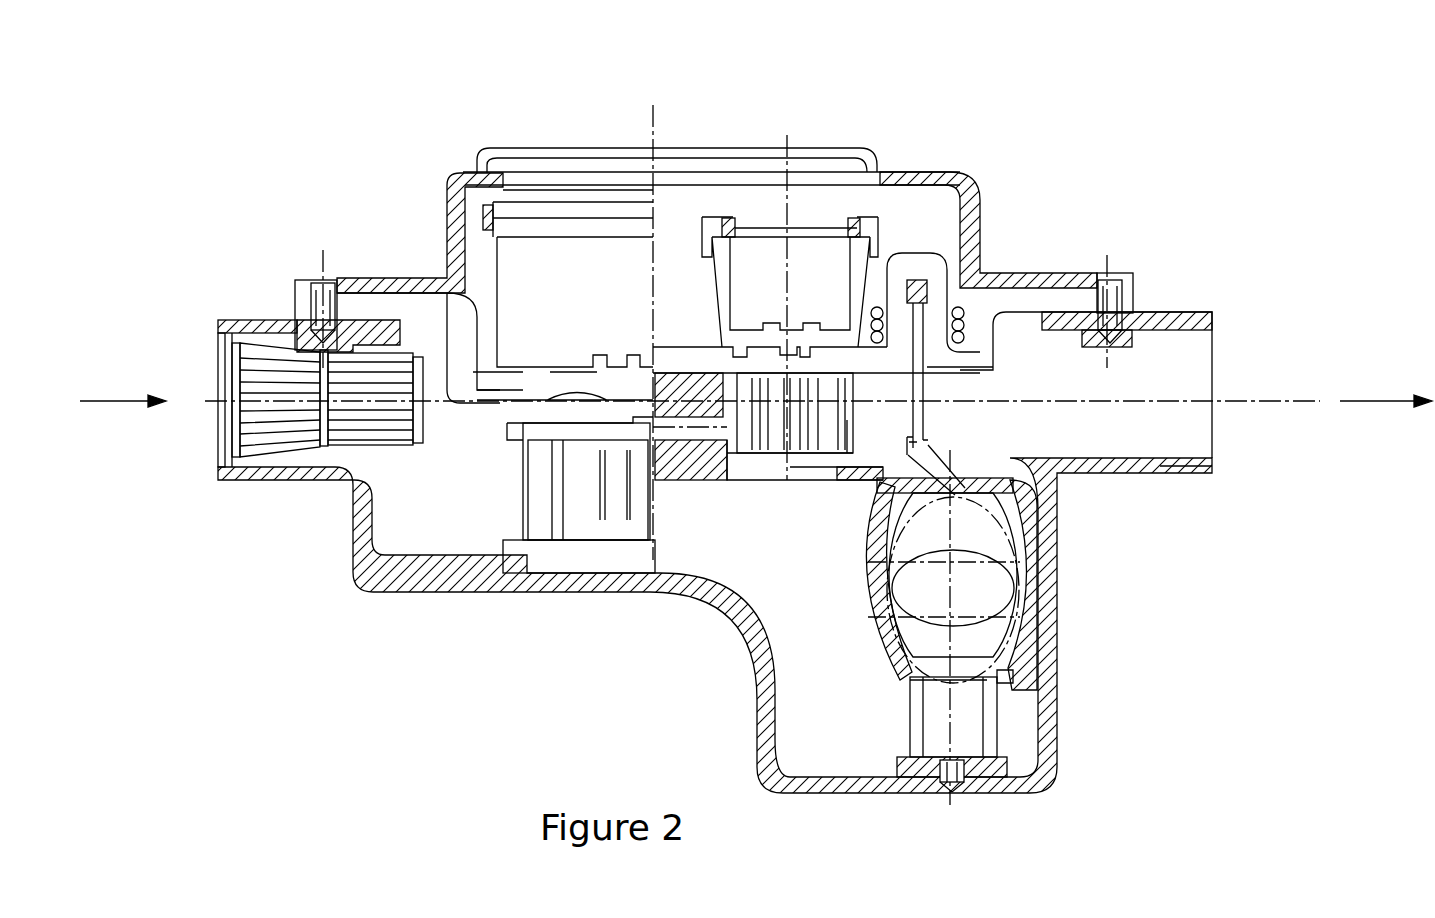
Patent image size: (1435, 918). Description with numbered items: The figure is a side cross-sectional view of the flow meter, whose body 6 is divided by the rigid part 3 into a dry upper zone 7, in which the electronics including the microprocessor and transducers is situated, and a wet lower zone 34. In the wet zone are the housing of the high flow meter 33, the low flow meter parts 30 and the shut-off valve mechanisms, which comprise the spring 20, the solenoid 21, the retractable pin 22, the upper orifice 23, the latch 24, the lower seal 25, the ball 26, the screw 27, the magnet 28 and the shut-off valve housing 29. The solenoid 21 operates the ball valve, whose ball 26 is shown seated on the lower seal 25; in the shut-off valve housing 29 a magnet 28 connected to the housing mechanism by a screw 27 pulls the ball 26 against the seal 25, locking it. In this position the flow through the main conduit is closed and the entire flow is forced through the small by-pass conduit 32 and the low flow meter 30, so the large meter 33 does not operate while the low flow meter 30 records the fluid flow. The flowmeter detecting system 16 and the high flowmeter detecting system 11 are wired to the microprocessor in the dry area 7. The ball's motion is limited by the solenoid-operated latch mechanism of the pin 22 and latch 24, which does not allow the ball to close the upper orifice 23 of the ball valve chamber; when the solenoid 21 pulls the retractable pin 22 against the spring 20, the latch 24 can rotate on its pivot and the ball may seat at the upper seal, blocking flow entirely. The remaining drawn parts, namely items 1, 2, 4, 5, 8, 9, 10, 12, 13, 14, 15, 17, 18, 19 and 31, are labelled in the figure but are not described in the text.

The filter 1 is at (237, 382).
The inlet connection 2 is at (228, 322).
The division between the wet and dry zone 3 is at (513, 407).
The bolt 4 is at (314, 280).
The flange 5 is at (378, 318).
The body of the flow meter 6 is at (413, 285).
The dry area 7 is at (457, 175).
The cover cap 8 is at (487, 290).
The seal 9 is at (488, 208).
The diaphragm 10 is at (545, 205).
The high flowmeter detecting system 11 is at (594, 247).
The piston axis 12 is at (642, 152).
The valve body 13 is at (712, 220).
The seal ring 14 is at (729, 222).
The valve stem 15 is at (767, 225).
The flowmeter detecting system 16 is at (812, 250).
The cover plate 17 is at (851, 180).
The spring 18 is at (860, 280).
The bonnet 19 is at (933, 208).
The spring 20 is at (976, 252).
The solenoid 21 is at (980, 292).
The retractable pin 22 is at (930, 397).
The upper orifice 23 is at (1000, 477).
The latch 24 is at (1013, 490).
The lower seal 25 is at (1000, 667).
The ball 26 is at (970, 643).
The screw 27 is at (955, 782).
The magnet 28 is at (922, 767).
The shut-off valve housing 29 is at (870, 633).
The low flow detector 30 is at (777, 440).
The core plate 31 is at (745, 467).
The small conduit 32 is at (693, 427).
The high flow detector 33 is at (615, 513).
The wet lower zone 34 is at (537, 560).